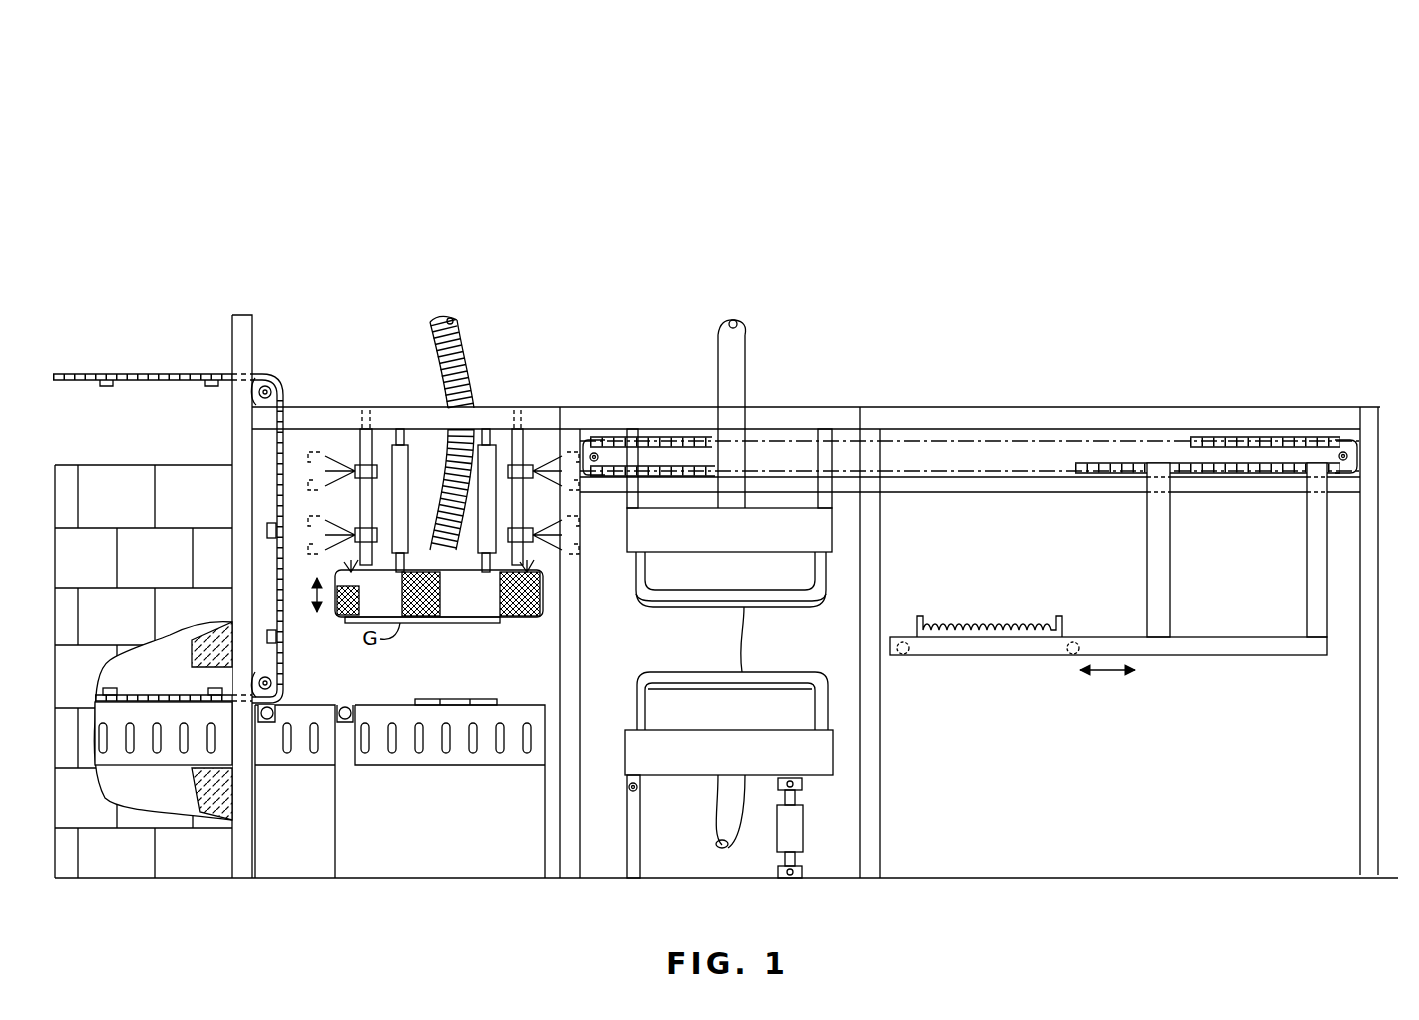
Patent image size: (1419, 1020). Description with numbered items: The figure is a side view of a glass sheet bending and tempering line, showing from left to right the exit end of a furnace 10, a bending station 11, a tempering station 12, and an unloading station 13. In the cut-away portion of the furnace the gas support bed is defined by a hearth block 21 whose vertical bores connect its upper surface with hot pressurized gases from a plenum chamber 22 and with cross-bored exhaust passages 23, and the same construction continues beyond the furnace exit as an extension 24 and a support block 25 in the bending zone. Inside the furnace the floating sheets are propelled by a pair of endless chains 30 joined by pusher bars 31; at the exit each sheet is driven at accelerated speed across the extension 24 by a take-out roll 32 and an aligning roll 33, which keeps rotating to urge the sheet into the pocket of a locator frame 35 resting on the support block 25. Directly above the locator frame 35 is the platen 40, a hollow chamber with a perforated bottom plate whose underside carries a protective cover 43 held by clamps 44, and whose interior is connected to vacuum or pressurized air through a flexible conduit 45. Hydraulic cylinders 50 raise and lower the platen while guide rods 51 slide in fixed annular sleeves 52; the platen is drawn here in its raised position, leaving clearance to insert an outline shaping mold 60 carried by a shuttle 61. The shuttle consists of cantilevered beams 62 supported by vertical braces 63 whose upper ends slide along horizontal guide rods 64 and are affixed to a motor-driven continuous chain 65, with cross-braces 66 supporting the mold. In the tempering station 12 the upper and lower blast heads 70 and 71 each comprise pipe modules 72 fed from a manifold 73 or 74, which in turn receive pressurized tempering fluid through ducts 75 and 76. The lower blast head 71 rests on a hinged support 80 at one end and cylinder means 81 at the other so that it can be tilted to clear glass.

The furnace 10 is at (158, 312).
The bending station 11 is at (452, 302).
The tempering station 12 is at (730, 300).
The unloading station 13 is at (1115, 355).
The hearth block 21 is at (143, 671).
The plenum chamber 22 is at (133, 793).
The exhaust passages 23 is at (420, 752).
The extension 24 is at (303, 768).
The support block 25 is at (517, 705).
The endless chains 30 is at (173, 710).
The pusher bars 31 is at (110, 688).
The take-out roll 32 is at (272, 708).
The aligning roll 33 is at (345, 707).
The locator frame 35 is at (432, 699).
The platen 40 is at (512, 626).
The protective cover 43 is at (530, 604).
The clamps 44 is at (352, 574).
The flexible conduit 45 is at (474, 372).
The hydraulic cylinders 50 is at (478, 480).
The guide rods 51 is at (362, 508).
The annular sleeves 52 is at (360, 466).
The outline shaping mold 60 is at (1068, 630).
The shuttle 61 is at (1157, 668).
The cantilevered beams 62 is at (998, 656).
The vertical braces 63 is at (1307, 571).
The horizontal guide rods 64 is at (992, 493).
The continuous chain 65 is at (1265, 436).
The cross-braces 66 is at (1079, 645).
The upper blast head 70 is at (658, 617).
The lower blast head 71 is at (656, 664).
The pipe modules 72 is at (748, 625).
The manifold 73 is at (745, 552).
The manifold 74 is at (742, 730).
The duct 75 is at (748, 369).
The duct 76 is at (718, 819).
The hinged support 80 is at (640, 788).
The cylinder means 81 is at (803, 826).